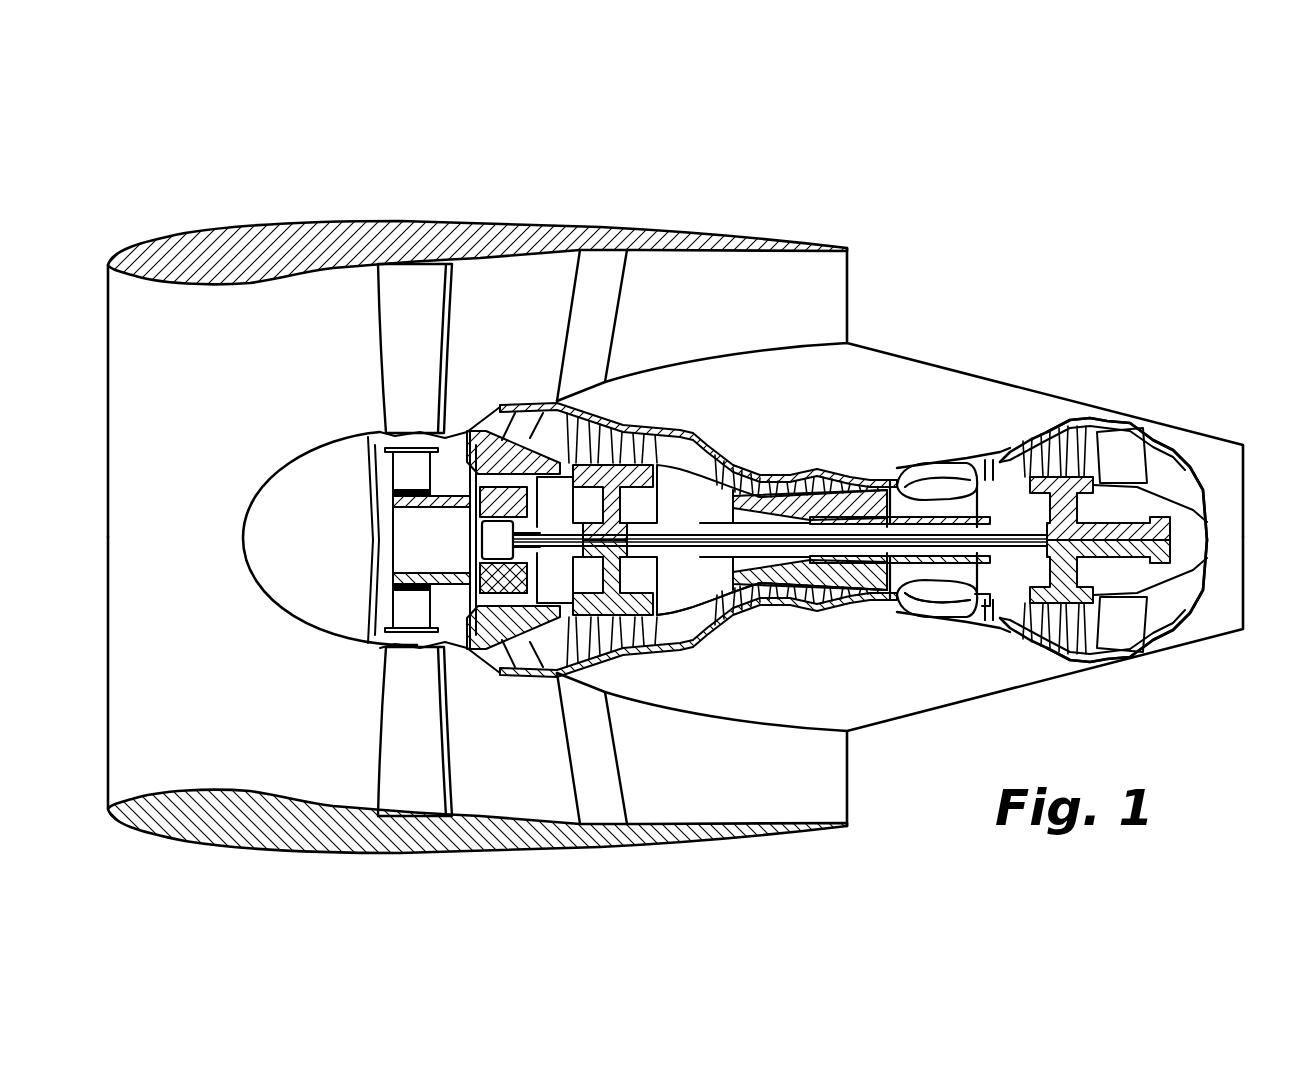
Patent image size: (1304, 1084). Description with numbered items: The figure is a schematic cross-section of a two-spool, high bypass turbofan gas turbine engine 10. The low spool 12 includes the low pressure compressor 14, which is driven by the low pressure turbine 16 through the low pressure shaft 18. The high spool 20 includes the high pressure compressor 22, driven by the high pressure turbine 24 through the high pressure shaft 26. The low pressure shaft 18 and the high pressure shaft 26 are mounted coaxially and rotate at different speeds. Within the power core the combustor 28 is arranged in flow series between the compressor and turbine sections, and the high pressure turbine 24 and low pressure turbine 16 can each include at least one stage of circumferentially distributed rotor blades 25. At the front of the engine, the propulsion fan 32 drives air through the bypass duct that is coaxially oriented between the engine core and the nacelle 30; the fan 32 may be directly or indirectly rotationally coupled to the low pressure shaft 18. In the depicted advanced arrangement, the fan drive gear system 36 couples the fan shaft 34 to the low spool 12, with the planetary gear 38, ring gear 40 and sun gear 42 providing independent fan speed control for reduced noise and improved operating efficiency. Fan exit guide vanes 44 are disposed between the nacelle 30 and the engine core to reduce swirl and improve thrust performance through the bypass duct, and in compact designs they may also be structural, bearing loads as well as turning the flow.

The gas turbine engine 10 is at (704, 150).
The low spool 12 is at (707, 560).
The low pressure compressor 14 is at (639, 428).
The low pressure turbine 16 is at (1060, 418).
The low pressure shaft 18 is at (670, 548).
The high spool 20 is at (950, 566).
The high pressure compressor 22 is at (863, 475).
The high pressure turbine 24 is at (987, 461).
The rotor blades 25 is at (981, 604).
The high pressure shaft 26 is at (905, 560).
The combustor 28 is at (937, 465).
The nacelle 30 is at (490, 216).
The propulsion fan 32 is at (361, 420).
The fan shaft 34 is at (410, 640).
The fan drive gear system 36 is at (474, 533).
The planetary gear 38 is at (442, 592).
The ring gear 40 is at (500, 574).
The sun gear 42 is at (503, 550).
The fan exit guide vanes 44 is at (612, 320).